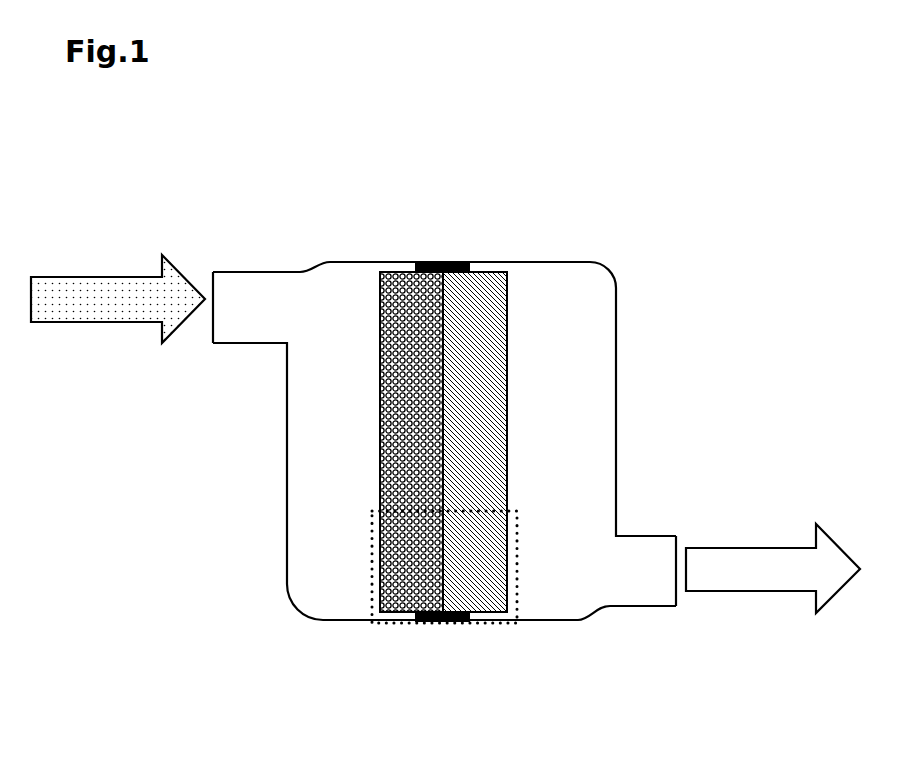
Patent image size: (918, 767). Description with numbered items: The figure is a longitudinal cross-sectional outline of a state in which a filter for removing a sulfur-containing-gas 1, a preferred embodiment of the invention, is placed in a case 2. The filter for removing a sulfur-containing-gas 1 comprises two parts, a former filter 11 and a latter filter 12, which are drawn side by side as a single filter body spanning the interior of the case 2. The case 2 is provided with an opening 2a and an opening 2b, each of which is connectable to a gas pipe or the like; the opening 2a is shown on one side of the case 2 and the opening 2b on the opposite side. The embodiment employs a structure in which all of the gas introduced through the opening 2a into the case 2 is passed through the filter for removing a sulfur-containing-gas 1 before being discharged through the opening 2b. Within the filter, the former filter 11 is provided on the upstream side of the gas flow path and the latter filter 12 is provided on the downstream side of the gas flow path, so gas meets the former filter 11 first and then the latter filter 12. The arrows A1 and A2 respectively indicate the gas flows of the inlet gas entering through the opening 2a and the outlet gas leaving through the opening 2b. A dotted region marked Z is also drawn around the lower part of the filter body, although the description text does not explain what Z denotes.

The filter for removing a sulfur-containing-gas 1 is at (693, 78).
The former filter 11 is at (427, 292).
The latter filter 12 is at (480, 347).
The case 2 is at (287, 410).
The opening 2a is at (215, 310).
The opening 2b is at (676, 560).
The region Z is at (372, 577).
The arrow A1 is at (130, 314).
The arrow A2 is at (762, 577).